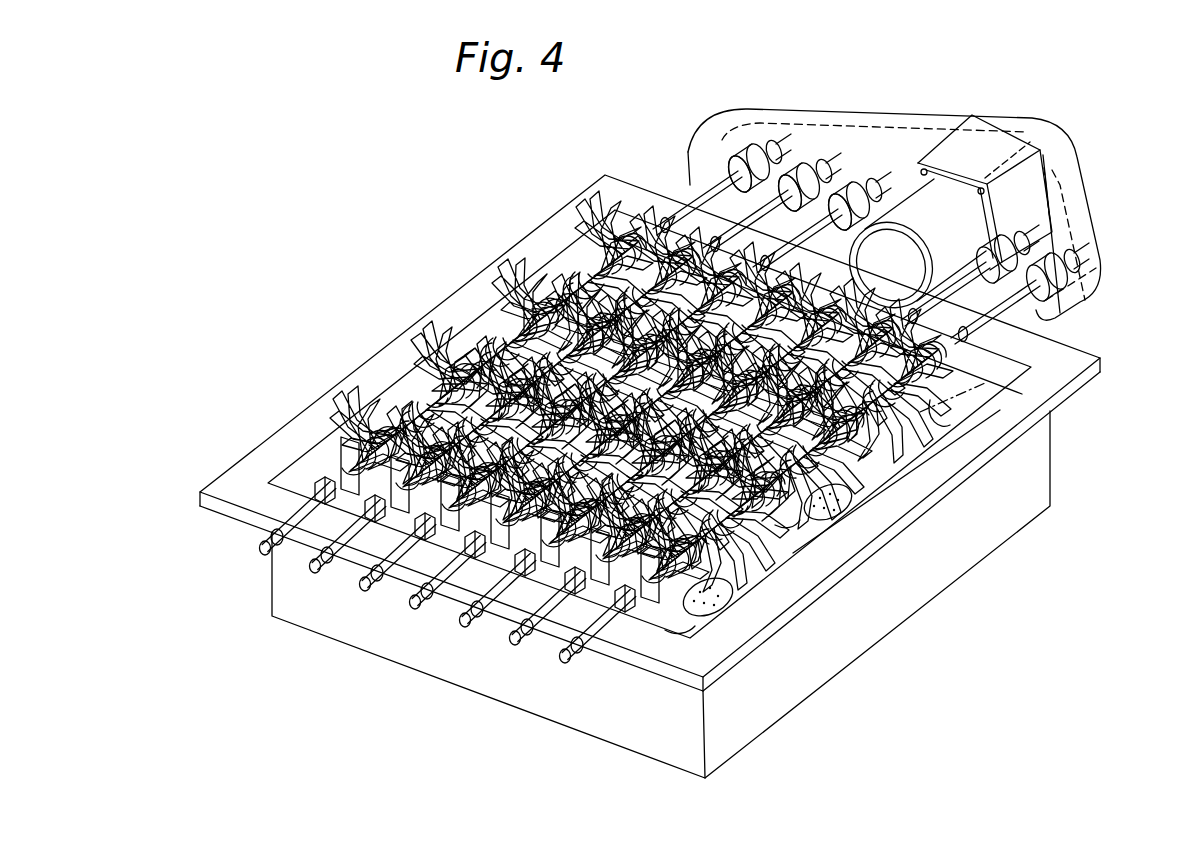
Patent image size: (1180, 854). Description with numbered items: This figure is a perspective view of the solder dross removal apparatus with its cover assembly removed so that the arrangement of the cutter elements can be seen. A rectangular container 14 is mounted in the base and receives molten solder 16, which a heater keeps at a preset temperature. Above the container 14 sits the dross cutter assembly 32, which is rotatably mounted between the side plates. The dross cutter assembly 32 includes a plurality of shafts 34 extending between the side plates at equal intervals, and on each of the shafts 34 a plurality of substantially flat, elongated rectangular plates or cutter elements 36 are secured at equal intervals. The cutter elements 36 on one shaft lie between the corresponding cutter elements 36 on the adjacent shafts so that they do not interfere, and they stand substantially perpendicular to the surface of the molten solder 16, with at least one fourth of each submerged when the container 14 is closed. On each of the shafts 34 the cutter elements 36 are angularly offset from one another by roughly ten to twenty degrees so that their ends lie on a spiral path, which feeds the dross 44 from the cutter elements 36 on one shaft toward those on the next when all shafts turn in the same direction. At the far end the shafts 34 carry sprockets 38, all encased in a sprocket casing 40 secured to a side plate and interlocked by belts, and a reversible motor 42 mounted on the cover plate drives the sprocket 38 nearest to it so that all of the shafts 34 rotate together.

The rectangular container 14 is at (957, 570).
The molten solder 16 is at (942, 412).
The dross cutter assembly 32 is at (793, 520).
The shafts 34 is at (662, 215).
The cutter elements 36 is at (533, 290).
The sprockets 38 is at (783, 178).
The sprocket casing 40 is at (1060, 150).
The reversible motor 42 is at (967, 240).
The dross 44 is at (707, 603).